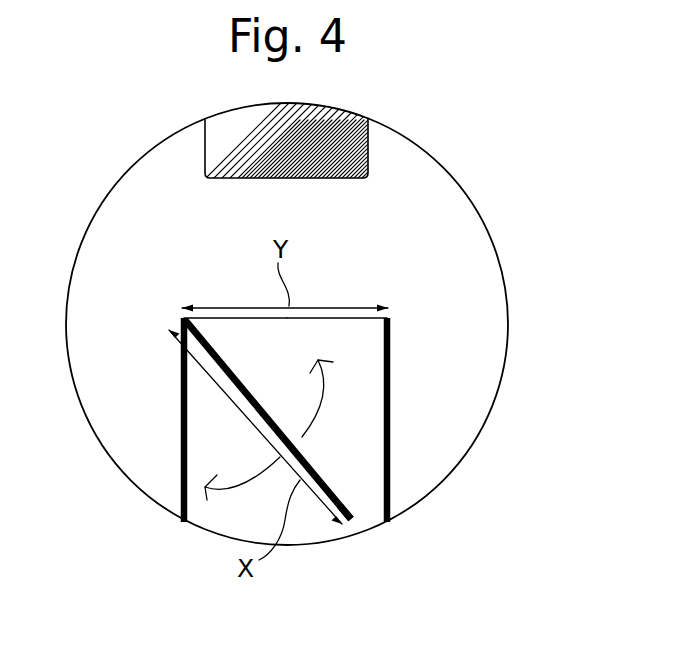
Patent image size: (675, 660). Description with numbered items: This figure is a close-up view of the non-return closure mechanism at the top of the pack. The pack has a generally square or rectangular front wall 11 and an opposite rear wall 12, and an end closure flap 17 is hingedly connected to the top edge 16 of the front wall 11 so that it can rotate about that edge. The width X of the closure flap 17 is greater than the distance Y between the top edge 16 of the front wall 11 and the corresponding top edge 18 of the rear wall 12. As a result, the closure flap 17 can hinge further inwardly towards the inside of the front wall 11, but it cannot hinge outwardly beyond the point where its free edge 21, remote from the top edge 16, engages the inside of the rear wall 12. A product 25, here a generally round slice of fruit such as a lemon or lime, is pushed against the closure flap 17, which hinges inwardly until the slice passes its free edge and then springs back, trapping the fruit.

The front wall 11 is at (182, 432).
The rear wall 12 is at (390, 441).
The top edge of the front wall 16 is at (184, 320).
The end closure flap 17 is at (262, 412).
The top edge of the rear wall 18 is at (390, 320).
The free edge of the flap 21 is at (359, 522).
The product 25 is at (225, 145).